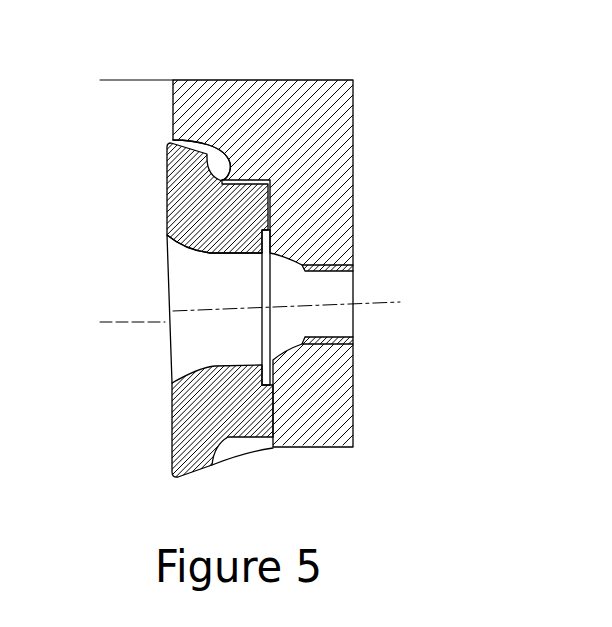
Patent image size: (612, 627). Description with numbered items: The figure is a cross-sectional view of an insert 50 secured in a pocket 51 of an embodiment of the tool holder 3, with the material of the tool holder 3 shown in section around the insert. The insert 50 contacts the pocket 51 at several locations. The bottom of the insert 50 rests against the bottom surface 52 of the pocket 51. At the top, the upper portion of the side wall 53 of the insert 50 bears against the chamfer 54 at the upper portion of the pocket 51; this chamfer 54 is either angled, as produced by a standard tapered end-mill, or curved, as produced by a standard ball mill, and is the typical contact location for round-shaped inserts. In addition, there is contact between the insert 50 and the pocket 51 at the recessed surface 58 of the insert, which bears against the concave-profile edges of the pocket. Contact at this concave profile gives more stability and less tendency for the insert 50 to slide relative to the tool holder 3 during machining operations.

The nozzle body 3 is at (328, 92).
The insert 50 is at (197, 422).
The pocket 51 is at (388, 388).
The bottom surface 52 is at (273, 203).
The side wall 53 is at (218, 168).
The chamfer 54 is at (218, 146).
The recessed surface 58 is at (167, 193).